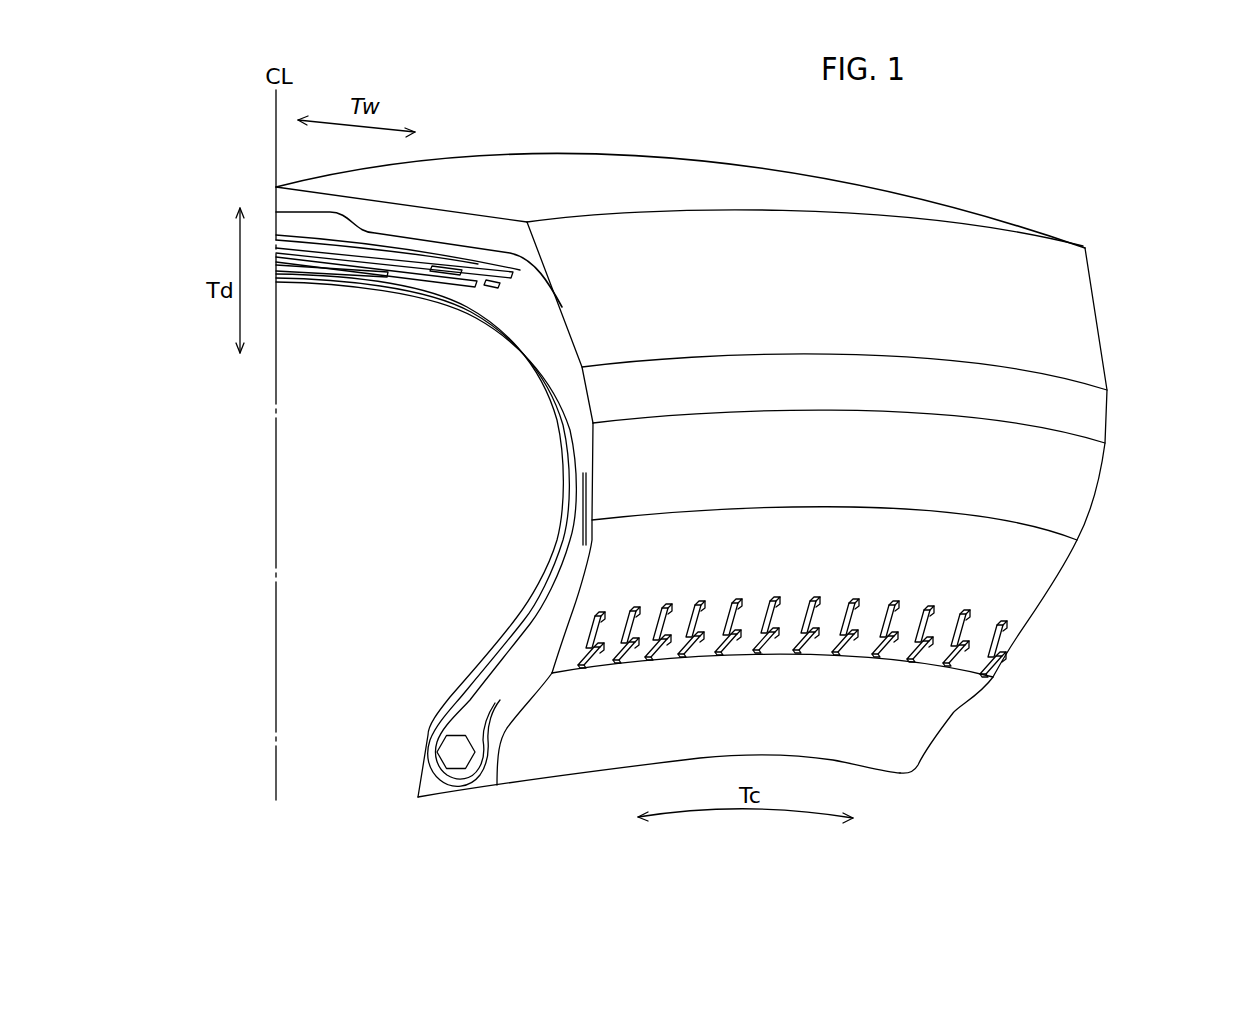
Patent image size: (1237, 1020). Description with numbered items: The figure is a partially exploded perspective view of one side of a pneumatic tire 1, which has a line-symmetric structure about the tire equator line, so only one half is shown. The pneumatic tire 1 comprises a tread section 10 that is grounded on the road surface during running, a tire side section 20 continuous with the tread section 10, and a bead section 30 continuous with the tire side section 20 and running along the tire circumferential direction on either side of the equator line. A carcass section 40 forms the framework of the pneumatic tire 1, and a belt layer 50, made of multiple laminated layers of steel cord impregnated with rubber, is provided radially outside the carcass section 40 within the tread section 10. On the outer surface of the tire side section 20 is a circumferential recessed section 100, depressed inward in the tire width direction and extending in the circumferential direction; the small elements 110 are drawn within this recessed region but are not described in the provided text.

The pneumatic tire 1 is at (1062, 172).
The tread section 10 is at (543, 175).
The tire side section 20 is at (1085, 488).
The bead section 30 is at (932, 702).
The carcass section 40 is at (563, 523).
The belt layer 50 is at (457, 252).
The circumferential recessed section 100 is at (842, 625).
The protrusion 110 is at (1000, 627).